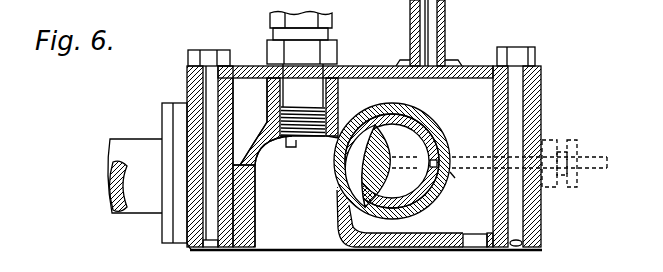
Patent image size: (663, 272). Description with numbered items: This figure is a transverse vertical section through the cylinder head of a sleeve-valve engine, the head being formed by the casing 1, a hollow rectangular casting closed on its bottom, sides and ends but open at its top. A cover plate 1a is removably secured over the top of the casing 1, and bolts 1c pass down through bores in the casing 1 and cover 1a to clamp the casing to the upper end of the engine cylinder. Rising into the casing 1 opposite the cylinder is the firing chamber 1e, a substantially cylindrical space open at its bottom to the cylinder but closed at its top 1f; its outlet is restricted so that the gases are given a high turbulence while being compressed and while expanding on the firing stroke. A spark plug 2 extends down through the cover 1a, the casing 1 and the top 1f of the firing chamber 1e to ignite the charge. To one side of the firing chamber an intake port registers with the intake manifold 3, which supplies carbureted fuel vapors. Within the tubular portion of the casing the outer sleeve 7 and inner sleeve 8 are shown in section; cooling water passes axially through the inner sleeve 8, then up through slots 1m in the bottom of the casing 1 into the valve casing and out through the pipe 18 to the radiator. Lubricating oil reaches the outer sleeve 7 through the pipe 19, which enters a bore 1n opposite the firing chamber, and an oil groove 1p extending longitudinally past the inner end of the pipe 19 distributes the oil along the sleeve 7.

The casing 1 is at (546, 212).
The cover plate 1a is at (475, 64).
The bolts 1c is at (205, 92).
The firing chamber 1e is at (302, 201).
The top of firing chamber 1f is at (265, 134).
The slots 1m is at (475, 247).
The bore 1n is at (455, 176).
The oil groove 1p is at (452, 153).
The spark plug 2 is at (303, 80).
The intake manifold 3 is at (132, 134).
The outer sleeve 7 is at (437, 135).
The inner sleeve 8 is at (433, 205).
The pipe 18 is at (412, 38).
The pipe 19 is at (545, 128).